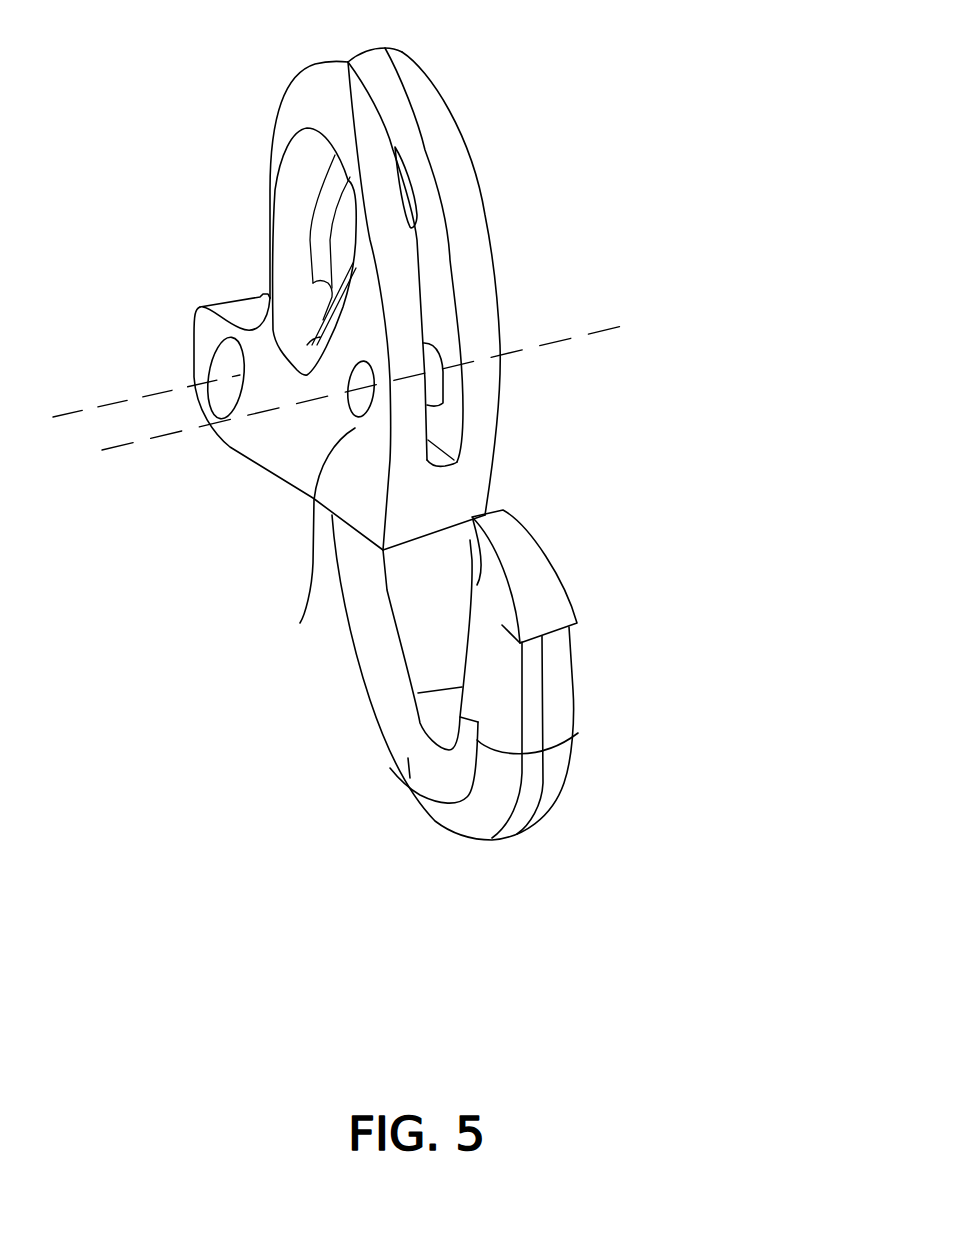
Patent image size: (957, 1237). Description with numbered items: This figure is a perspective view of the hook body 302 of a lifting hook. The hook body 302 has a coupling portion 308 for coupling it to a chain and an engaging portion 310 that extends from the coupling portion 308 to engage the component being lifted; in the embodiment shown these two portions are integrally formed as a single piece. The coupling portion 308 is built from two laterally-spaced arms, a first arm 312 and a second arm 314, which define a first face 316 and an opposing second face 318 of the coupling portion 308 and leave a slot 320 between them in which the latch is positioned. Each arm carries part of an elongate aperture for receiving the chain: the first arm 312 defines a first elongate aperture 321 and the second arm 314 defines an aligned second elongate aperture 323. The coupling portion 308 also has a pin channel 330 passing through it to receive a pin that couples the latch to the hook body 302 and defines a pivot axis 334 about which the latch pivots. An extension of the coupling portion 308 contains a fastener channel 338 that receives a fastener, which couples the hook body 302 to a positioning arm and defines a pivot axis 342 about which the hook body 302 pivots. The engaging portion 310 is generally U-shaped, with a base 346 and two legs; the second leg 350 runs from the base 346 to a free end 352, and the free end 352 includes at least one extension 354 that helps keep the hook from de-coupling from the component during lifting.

The hook body 302 is at (535, 272).
The coupling portion 308 is at (248, 283).
The engaging portion 310 is at (497, 843).
The first arm 312 is at (298, 92).
The second arm 314 is at (447, 120).
The first face 316 is at (260, 447).
The second face 318 is at (490, 228).
The slot 320 is at (432, 242).
The first elongate aperture 321 is at (268, 177).
The second elongate aperture 323 is at (413, 173).
The pin channel 330 is at (300, 623).
The pivot axis 334 is at (617, 328).
The fastener channel 338 is at (193, 320).
The pivot axis 342 is at (102, 405).
The base 346 is at (403, 789).
The second leg 350 is at (560, 720).
The free end 352 is at (568, 533).
The extension 354 is at (494, 550).